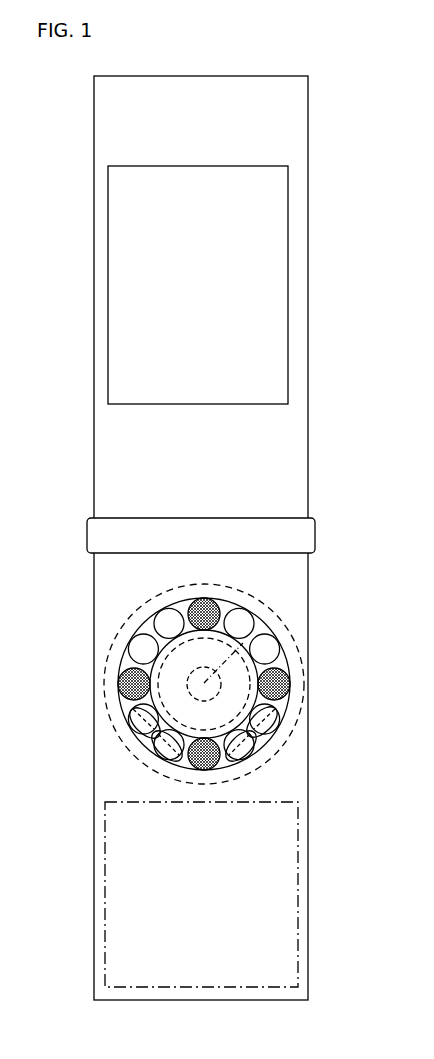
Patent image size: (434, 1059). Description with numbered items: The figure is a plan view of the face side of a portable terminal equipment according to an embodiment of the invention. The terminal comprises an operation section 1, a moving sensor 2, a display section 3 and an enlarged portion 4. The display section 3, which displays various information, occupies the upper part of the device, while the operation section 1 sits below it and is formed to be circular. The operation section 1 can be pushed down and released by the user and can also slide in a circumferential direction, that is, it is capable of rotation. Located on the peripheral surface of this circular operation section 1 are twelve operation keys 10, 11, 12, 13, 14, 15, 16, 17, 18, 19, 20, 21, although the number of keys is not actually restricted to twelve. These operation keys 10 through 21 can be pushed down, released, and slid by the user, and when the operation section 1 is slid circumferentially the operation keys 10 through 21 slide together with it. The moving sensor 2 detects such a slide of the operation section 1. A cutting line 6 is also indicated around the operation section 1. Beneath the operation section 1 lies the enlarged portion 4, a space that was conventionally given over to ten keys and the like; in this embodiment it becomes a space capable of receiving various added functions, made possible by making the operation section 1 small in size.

The operation section 1 is at (268, 622).
The moving sensor 2 is at (292, 646).
The display section 3 is at (237, 275).
The enlarged portion 4 is at (280, 870).
The cutting line 6 is at (288, 727).
The operation key 10 is at (230, 596).
The operation key 11 is at (272, 618).
The operation key 12 is at (270, 649).
The operation key 13 is at (288, 687).
The operation key 14 is at (256, 736).
The operation key 15 is at (258, 760).
The operation key 16 is at (172, 762).
The operation key 17 is at (153, 760).
The operation key 18 is at (131, 740).
The operation key 19 is at (124, 668).
The operation key 20 is at (142, 645).
The operation key 21 is at (168, 612).